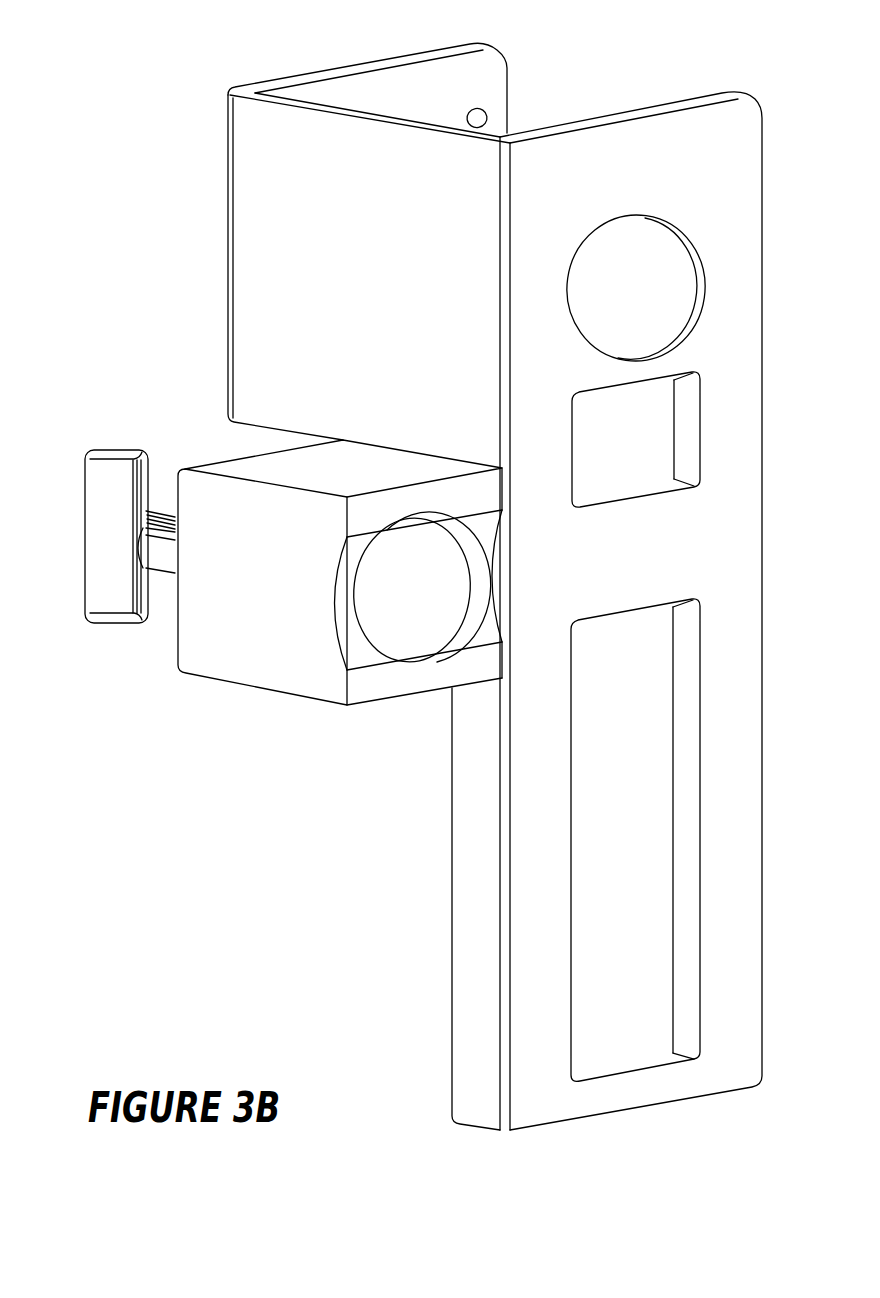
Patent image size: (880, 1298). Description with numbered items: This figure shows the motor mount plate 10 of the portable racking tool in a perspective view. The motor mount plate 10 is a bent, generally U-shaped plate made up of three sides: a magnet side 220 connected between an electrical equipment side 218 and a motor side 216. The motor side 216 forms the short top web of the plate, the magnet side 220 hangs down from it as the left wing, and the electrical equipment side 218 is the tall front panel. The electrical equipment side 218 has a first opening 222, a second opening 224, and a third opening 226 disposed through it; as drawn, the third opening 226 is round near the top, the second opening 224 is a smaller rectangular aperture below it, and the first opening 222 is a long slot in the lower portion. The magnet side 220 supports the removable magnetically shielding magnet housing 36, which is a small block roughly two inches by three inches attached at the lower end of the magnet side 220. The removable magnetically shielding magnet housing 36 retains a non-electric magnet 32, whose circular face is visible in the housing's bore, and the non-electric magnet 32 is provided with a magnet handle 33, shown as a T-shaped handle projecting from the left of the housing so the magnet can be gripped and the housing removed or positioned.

The motor mount plate 10 is at (180, 71).
The motor side 216 is at (470, 80).
The electrical equipment side 218 is at (735, 1057).
The magnet side 220 is at (303, 238).
The first opening 222 is at (714, 812).
The second opening 224 is at (714, 432).
The third opening 226 is at (716, 287).
The non-electric magnet 32 is at (410, 615).
The magnet handle 33 is at (97, 533).
The removable magnetically shielding magnet housing 36 is at (235, 655).